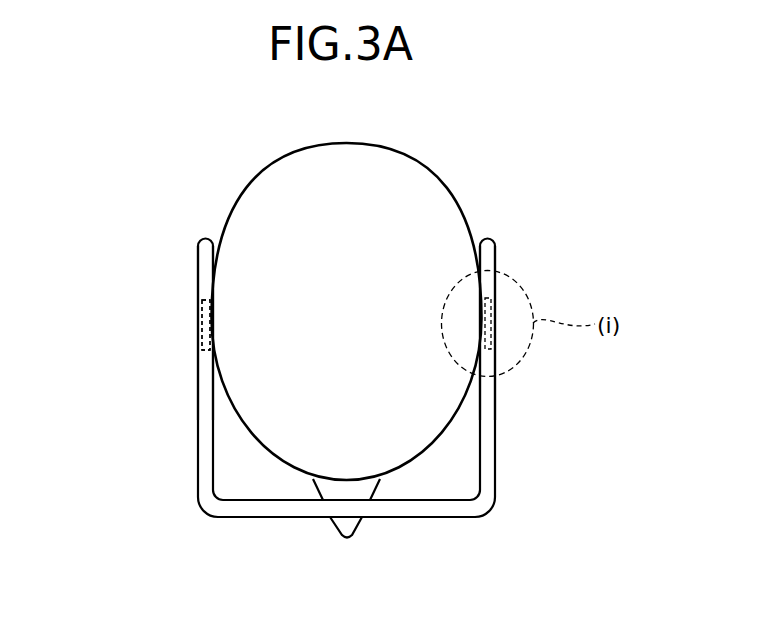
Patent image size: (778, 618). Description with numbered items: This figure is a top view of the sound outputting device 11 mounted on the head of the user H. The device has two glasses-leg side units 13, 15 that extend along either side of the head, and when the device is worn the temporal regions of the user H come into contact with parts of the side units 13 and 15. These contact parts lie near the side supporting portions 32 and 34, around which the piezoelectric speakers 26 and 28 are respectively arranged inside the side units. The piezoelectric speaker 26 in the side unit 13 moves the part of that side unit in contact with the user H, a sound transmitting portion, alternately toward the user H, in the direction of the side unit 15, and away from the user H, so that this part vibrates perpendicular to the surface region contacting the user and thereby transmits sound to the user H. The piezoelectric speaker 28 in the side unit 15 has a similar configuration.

The user H is at (270, 202).
The sound outputting device 11 is at (108, 358).
The side unit 13 is at (488, 422).
The side unit 15 is at (198, 421).
The piezoelectric speaker 26 is at (492, 307).
The piezoelectric speaker 28 is at (197, 307).
The side supporting portion 32 is at (480, 324).
The side supporting portion 34 is at (213, 322).